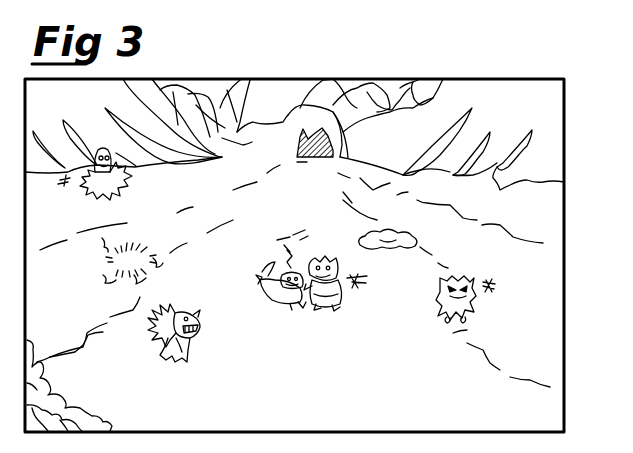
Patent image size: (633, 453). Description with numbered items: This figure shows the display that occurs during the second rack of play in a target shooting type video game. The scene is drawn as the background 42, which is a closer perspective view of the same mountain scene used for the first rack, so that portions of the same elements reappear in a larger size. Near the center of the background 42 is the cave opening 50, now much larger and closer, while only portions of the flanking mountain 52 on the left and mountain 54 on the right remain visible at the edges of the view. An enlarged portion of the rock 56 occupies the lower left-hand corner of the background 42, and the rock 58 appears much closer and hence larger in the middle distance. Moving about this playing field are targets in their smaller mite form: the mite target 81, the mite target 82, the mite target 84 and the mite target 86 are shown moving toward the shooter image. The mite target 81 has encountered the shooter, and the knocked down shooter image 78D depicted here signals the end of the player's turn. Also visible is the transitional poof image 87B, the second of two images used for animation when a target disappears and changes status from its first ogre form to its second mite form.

The background 42 is at (571, 276).
The cave opening 50 is at (310, 158).
The mountain 52 is at (107, 88).
The mountain 54 is at (510, 87).
The rock 56 is at (62, 400).
The rock 58 is at (410, 233).
The knocked down shooter image 78D is at (287, 312).
The mite target 81 is at (338, 292).
The mite target 82 is at (95, 194).
The mite target 84 is at (192, 345).
The mite target 86 is at (445, 320).
The transitional poof image 87B is at (140, 228).